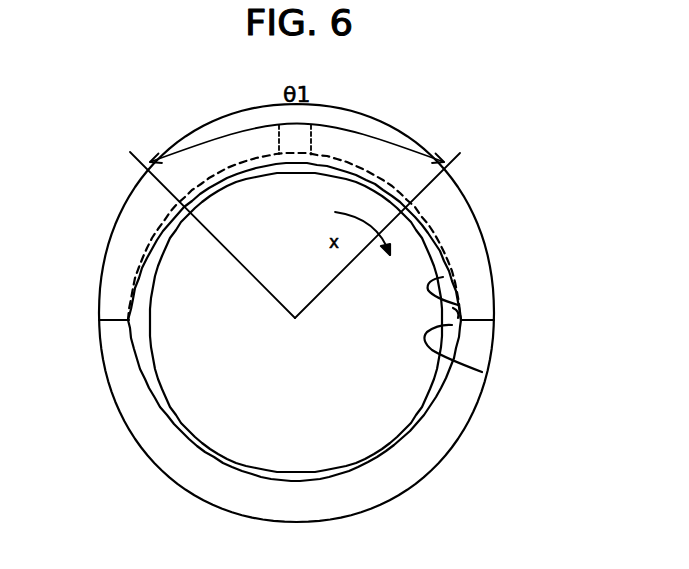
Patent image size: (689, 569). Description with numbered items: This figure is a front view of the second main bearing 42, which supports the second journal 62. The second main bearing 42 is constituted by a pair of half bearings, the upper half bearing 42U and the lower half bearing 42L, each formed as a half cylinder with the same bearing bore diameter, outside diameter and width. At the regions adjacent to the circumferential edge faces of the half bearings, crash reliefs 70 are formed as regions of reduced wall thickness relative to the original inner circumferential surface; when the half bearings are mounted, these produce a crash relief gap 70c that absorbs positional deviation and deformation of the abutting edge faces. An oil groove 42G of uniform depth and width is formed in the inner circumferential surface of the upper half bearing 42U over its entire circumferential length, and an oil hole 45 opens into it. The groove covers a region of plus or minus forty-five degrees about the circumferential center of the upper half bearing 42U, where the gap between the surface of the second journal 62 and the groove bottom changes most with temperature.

The second main bearing 42 is at (153, 185).
The upper half bearing 42U is at (128, 233).
The lower half bearing 42L is at (107, 357).
The oil groove 42G is at (258, 160).
The oil hole 45 is at (303, 127).
The second journal 62 is at (380, 406).
The crash relief 70 is at (443, 277).
The crash relief gap 70c is at (458, 305).